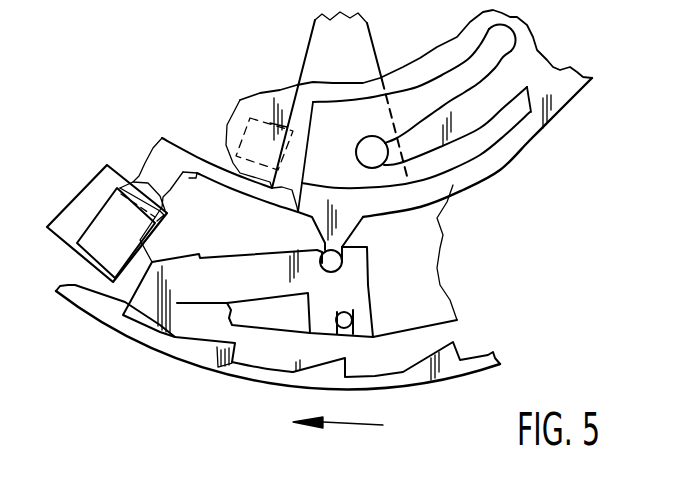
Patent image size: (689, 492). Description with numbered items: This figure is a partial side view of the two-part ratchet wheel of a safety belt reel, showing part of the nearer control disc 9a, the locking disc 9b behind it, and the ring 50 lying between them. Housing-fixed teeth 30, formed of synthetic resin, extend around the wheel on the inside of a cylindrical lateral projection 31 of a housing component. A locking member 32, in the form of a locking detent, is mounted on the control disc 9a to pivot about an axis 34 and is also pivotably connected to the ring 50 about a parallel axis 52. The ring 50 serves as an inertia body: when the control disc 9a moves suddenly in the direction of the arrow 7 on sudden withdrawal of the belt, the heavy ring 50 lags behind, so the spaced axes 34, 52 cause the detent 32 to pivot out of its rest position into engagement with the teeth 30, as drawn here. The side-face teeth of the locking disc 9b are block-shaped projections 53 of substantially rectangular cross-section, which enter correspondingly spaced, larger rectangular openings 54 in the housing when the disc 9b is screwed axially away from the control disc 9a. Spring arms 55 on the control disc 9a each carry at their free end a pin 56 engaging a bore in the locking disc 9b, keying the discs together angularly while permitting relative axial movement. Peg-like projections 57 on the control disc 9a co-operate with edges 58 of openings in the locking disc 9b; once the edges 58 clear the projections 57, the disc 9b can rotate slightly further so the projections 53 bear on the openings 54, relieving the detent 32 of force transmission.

The arrow 7 is at (370, 423).
The control disc 9a is at (561, 110).
The locking disc 9b is at (145, 166).
The teeth 30 is at (311, 345).
The cylindrical lateral projection 31 is at (183, 351).
The locking member 32 is at (230, 270).
The axis 34 is at (342, 261).
The ring 50 is at (440, 251).
The axis 52 is at (351, 320).
The block-shaped projections 53 is at (85, 252).
The openings 54 is at (85, 193).
The spring arms 55 is at (481, 107).
The pin 56 is at (368, 147).
The peg-like projections 57 is at (244, 113).
The edges 58 is at (308, 45).